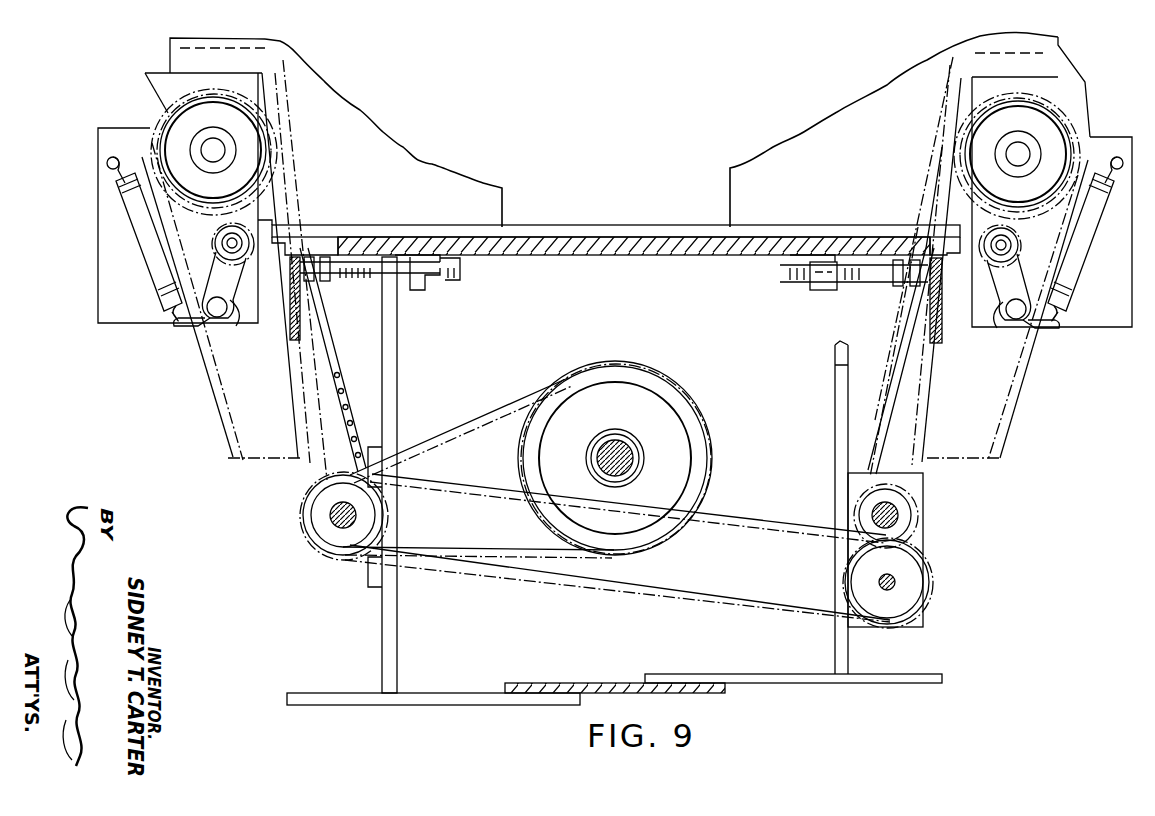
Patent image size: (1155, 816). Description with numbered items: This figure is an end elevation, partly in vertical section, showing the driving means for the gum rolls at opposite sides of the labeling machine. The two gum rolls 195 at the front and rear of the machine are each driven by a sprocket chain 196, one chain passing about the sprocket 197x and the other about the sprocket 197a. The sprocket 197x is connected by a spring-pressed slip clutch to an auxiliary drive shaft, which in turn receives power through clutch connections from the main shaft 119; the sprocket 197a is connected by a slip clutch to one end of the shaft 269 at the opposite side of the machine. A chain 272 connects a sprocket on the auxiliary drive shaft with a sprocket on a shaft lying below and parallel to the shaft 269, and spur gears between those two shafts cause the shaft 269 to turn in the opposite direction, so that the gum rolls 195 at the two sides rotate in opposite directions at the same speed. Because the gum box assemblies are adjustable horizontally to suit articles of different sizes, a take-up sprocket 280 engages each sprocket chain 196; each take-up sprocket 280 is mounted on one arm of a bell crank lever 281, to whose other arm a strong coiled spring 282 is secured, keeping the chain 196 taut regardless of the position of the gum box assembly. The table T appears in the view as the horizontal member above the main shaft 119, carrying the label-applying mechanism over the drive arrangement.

The table T is at (606, 255).
The main shaft 119 is at (630, 455).
The gum roll 195 is at (186, 135).
The sprocket chain 196 is at (337, 372).
The sprocket 197a is at (332, 515).
The sprocket 197x is at (905, 520).
The shaft 269 is at (336, 528).
The chain 272 is at (463, 490).
The take-up sprocket 280 is at (212, 246).
The bell crank lever 281 is at (227, 320).
The coiled spring 282 is at (135, 240).